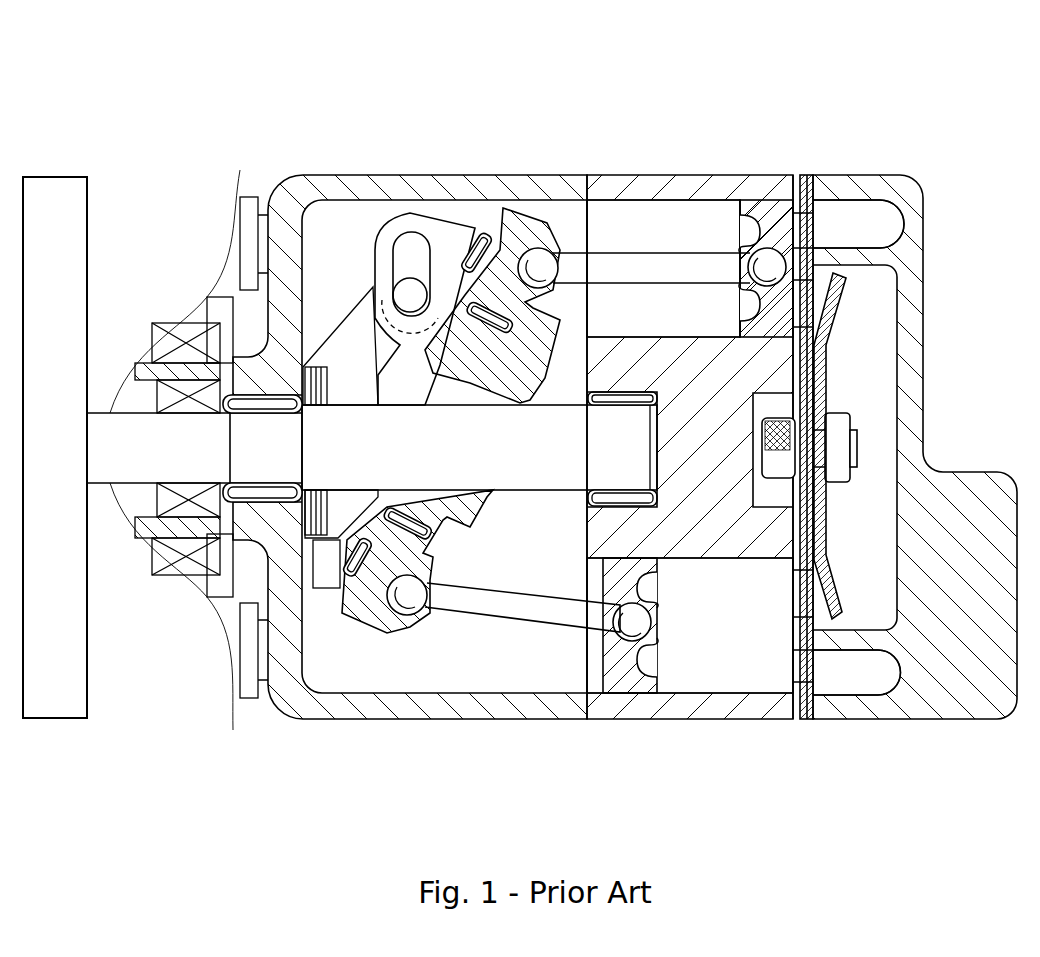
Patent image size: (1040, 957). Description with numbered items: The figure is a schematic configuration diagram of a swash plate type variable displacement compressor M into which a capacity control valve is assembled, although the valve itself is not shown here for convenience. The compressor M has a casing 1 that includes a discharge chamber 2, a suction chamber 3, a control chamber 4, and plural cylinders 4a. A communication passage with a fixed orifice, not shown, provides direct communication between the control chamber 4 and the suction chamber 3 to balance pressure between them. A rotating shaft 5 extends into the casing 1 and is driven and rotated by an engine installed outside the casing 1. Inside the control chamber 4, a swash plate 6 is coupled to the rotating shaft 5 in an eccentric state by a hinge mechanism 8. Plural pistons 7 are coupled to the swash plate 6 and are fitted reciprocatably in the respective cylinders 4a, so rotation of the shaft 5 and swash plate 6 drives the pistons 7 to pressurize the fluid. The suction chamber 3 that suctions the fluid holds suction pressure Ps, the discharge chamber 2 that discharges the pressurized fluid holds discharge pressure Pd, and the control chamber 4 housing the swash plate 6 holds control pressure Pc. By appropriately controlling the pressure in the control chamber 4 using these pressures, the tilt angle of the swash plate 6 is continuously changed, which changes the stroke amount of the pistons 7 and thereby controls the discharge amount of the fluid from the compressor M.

The variable displacement compressor M is at (901, 102).
The casing 1 is at (315, 168).
The discharge chamber 2 is at (870, 369).
The suction chamber 3 is at (883, 223).
The control chamber 4 is at (503, 673).
The cylinders 4a is at (667, 222).
The rotating shaft 5 is at (333, 453).
The swash plate 6 is at (505, 290).
The pistons 7 is at (776, 215).
The hinge mechanism 8 is at (342, 358).